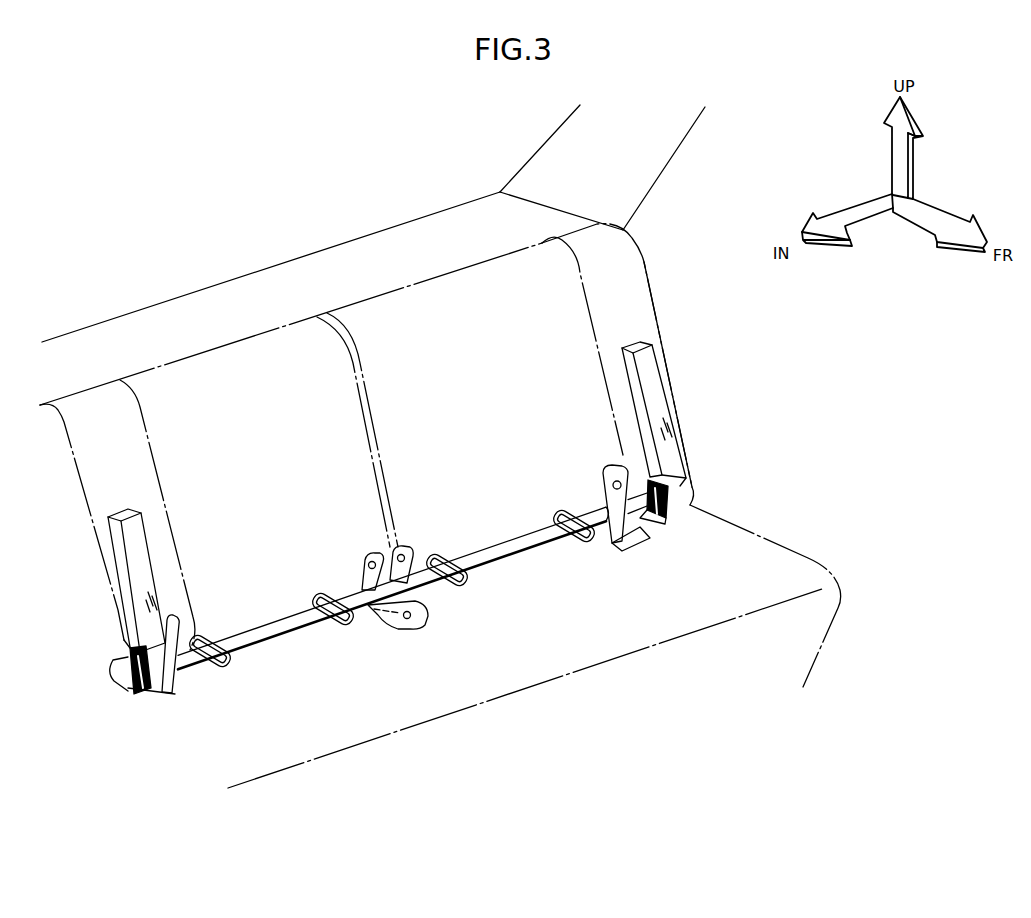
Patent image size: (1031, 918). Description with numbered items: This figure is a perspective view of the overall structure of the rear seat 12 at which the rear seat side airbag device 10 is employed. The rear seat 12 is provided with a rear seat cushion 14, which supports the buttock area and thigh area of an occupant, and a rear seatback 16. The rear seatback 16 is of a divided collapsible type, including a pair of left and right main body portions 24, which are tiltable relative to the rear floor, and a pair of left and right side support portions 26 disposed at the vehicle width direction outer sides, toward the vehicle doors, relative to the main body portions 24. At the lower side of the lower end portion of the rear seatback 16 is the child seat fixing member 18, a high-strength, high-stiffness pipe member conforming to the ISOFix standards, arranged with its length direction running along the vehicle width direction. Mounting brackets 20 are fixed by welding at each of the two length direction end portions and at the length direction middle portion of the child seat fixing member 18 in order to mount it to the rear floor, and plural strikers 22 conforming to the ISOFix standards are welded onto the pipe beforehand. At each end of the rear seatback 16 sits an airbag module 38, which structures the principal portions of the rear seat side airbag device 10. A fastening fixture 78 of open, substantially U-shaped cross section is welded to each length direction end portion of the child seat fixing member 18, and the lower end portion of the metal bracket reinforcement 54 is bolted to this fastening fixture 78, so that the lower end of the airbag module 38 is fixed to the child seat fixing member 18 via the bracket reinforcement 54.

The rear seat side airbag device 10 is at (111, 703).
The rear seat 12 is at (323, 279).
The rear seat cushion 14 is at (809, 559).
The rear seatback 16 is at (653, 291).
The child seat fixing member 18 is at (280, 613).
The mounting brackets 20 is at (176, 682).
The strikers 22 is at (230, 647).
The main body portions 24 is at (215, 349).
The side support portions 26 is at (87, 391).
The airbag module 38 is at (118, 548).
The bracket reinforcement 54 is at (112, 664).
The fastening fixture 78 is at (118, 678).